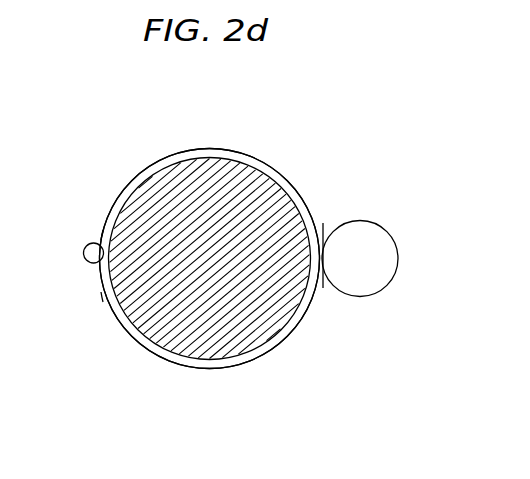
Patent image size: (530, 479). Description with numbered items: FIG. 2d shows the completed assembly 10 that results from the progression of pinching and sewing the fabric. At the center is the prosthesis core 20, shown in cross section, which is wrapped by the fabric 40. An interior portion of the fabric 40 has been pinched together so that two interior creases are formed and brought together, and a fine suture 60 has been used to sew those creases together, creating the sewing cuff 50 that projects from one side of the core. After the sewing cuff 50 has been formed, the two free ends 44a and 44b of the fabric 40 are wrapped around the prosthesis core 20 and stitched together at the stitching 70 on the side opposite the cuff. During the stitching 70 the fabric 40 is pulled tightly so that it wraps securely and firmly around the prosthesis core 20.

The catheter assembly 10 is at (141, 123).
The prosthesis core 20 is at (150, 242).
The fabric 40 is at (268, 346).
The free end of fabric 44a is at (98, 233).
The free end of fabric 44b is at (100, 297).
The sewing cuff 50 is at (380, 287).
The fine suture 60 is at (323, 250).
The stitching 70 is at (88, 263).